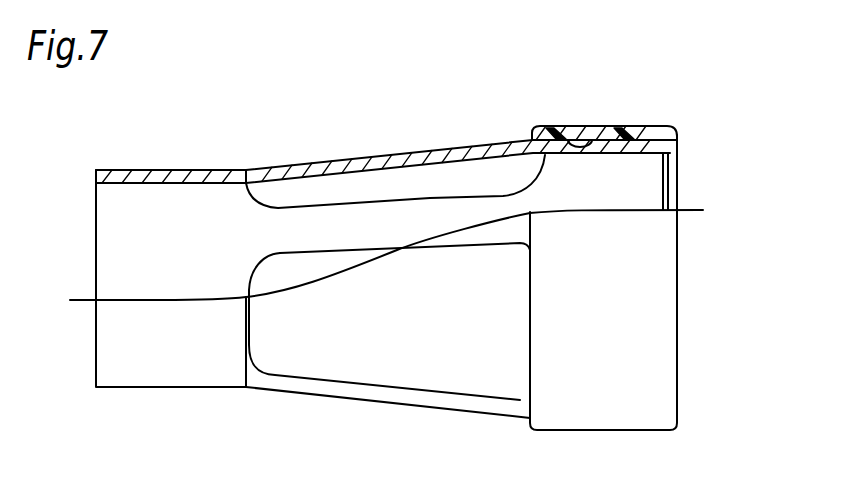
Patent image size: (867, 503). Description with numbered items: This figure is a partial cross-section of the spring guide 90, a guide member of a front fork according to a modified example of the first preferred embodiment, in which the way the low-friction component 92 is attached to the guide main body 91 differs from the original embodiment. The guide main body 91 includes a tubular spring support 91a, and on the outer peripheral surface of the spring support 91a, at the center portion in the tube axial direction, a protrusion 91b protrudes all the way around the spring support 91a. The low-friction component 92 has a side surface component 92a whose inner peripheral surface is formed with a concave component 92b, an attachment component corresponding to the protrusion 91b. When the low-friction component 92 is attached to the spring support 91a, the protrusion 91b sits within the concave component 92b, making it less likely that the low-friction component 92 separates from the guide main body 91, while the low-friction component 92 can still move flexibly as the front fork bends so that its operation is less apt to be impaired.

The spring guide 90 is at (727, 81).
The guide main body 91 is at (291, 161).
The spring support 91a is at (633, 136).
The protrusion 91b is at (606, 140).
The low-friction component 92 is at (586, 123).
The side surface component 92a is at (647, 132).
The concave component 92b is at (552, 130).